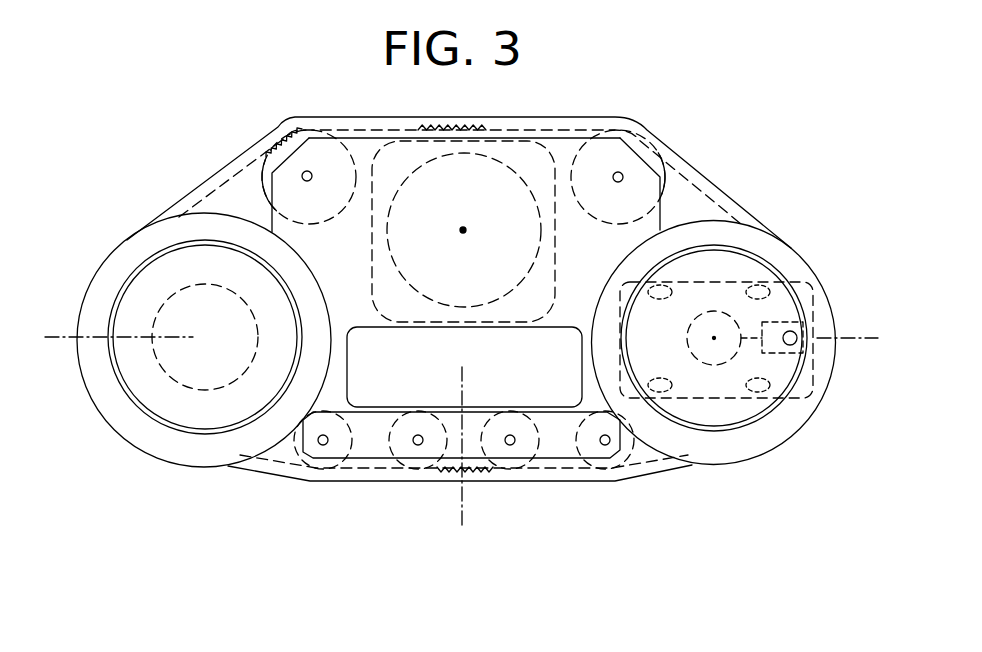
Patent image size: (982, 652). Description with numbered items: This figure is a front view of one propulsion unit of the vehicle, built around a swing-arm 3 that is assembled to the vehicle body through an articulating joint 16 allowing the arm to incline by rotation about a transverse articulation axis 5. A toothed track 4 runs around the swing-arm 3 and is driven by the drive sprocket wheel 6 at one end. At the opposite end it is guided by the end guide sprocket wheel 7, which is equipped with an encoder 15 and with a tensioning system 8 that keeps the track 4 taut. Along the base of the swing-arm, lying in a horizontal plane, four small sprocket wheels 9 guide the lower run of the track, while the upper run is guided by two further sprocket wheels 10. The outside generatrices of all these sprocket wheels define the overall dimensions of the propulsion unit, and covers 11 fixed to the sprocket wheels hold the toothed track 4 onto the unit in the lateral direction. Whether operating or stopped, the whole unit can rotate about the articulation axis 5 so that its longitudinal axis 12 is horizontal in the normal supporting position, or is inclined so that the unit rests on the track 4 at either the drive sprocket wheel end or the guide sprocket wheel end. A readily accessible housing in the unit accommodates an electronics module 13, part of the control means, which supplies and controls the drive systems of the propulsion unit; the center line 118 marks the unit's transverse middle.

The swing-arm 3 is at (747, 188).
The toothed track 4 is at (542, 128).
The transverse articulation axis 5 is at (463, 230).
The drive sprocket wheel 6 is at (147, 287).
The end guide sprocket wheel 7 is at (772, 368).
The tensioning system 8 is at (785, 282).
The small sprocket wheels 9 is at (303, 454).
The sprocket wheel 10 is at (355, 160).
The covers 11 is at (213, 177).
The longitudinal axis 12 is at (862, 335).
The electronics module 13 is at (530, 377).
The encoder 15 is at (708, 363).
The articulating joint 16 is at (383, 233).
The center line 118 is at (463, 508).